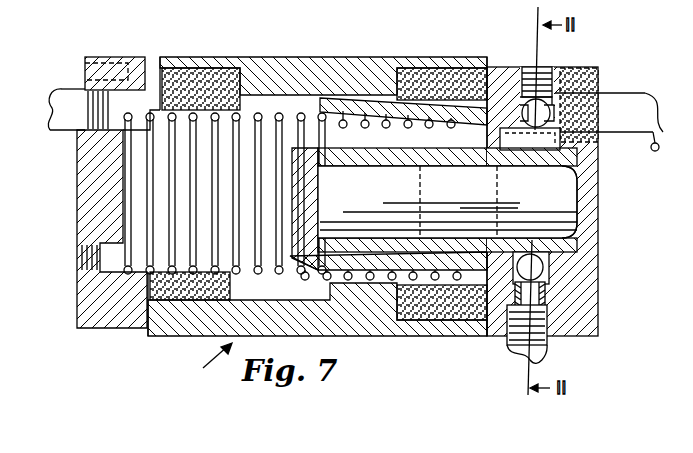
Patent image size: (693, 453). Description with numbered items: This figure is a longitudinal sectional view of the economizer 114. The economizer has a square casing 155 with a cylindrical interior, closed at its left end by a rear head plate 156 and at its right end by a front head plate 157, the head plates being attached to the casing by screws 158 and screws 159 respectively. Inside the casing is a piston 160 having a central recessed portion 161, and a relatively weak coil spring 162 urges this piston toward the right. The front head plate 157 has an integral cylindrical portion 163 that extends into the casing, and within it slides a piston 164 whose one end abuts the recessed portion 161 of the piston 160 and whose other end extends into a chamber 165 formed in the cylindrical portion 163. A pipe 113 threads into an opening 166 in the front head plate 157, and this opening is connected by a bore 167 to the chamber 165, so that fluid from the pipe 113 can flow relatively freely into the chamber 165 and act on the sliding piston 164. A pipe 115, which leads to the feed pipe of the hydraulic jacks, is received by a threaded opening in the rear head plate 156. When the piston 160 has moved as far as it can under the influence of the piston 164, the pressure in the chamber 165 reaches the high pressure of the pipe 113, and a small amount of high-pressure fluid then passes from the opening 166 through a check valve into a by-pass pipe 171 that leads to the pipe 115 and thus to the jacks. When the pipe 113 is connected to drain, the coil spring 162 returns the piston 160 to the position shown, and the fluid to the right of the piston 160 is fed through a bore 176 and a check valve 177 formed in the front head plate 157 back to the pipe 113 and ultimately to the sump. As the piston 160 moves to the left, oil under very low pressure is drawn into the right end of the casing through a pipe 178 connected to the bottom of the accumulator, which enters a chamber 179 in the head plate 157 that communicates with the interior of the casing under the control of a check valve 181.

The pipe 113 is at (617, 100).
The economizer 114 is at (203, 363).
The pipe 115 is at (64, 126).
The casing 155 is at (383, 332).
The rear head plate 156 is at (112, 70).
The front head plate 157 is at (588, 198).
The screws 158 is at (232, 60).
The screws 159 is at (437, 68).
The piston 160 is at (376, 110).
The central recessed portion 161 is at (304, 197).
The coil spring 162 is at (160, 190).
The cylindrical portion 163 is at (415, 167).
The sliding piston 164 is at (448, 208).
The chamber 165 is at (578, 168).
The opening 166 is at (578, 73).
The bore 167 is at (562, 128).
The by-pass pipe 171 is at (658, 151).
The bore 176 is at (530, 139).
The check valve 177 is at (533, 100).
The pipe 178 is at (540, 351).
The chamber 179 is at (543, 262).
The check valve 181 is at (546, 266).